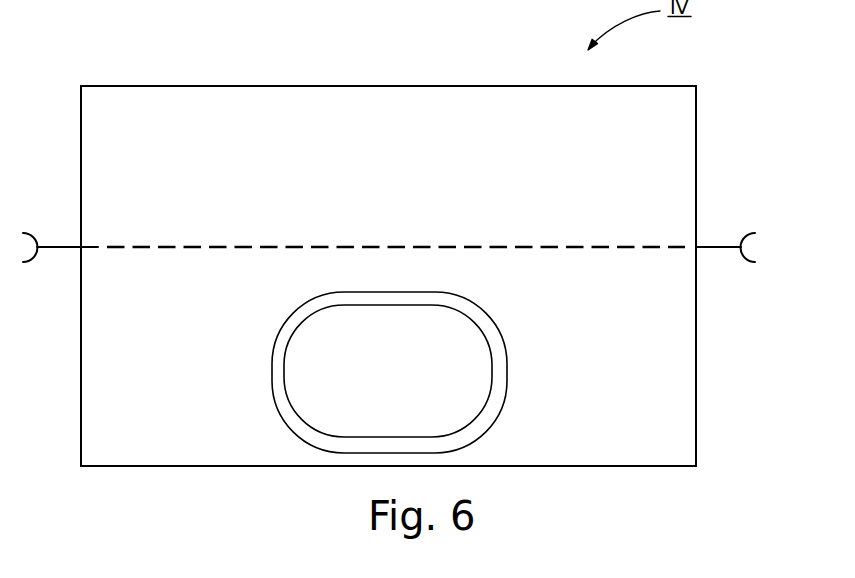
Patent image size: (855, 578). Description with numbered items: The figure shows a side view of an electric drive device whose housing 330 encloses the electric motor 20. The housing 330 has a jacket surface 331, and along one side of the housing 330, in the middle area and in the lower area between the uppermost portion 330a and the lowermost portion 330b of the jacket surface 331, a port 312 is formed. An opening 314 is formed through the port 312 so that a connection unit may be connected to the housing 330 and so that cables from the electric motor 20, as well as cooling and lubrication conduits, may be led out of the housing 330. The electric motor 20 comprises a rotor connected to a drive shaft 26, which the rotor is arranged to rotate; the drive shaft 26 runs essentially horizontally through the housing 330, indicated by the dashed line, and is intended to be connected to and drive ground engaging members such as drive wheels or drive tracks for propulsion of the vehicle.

The housing 330 is at (247, 80).
The uppermost portion 330a is at (389, 86).
The lowermost portion 330b is at (641, 467).
The drive shaft 26 is at (652, 245).
The jacket surface 331 is at (128, 400).
The electric motor 20 is at (158, 467).
The port 312 is at (347, 448).
The opening 314 is at (440, 402).